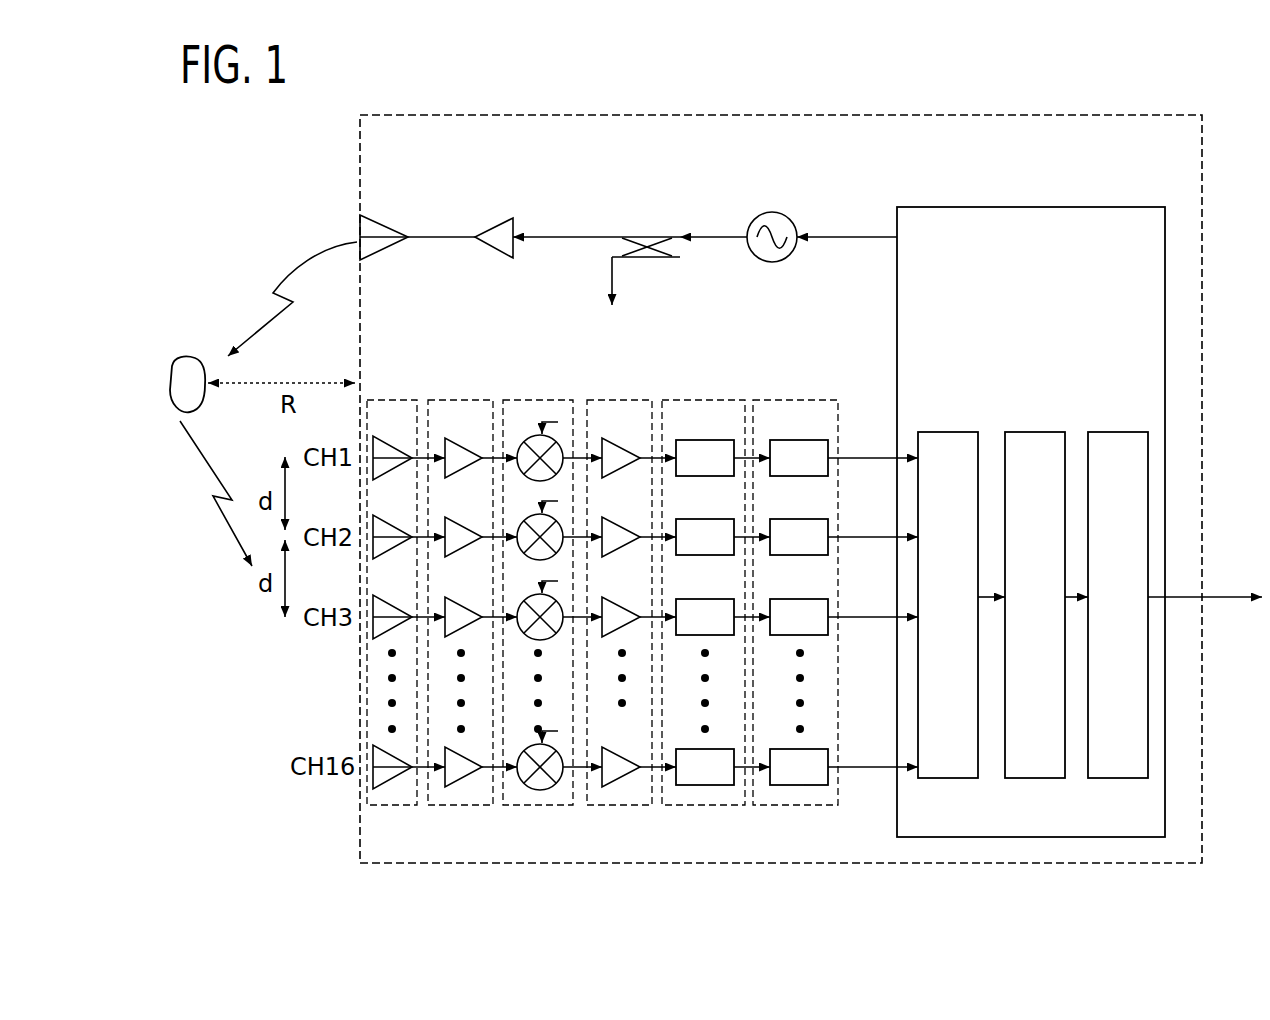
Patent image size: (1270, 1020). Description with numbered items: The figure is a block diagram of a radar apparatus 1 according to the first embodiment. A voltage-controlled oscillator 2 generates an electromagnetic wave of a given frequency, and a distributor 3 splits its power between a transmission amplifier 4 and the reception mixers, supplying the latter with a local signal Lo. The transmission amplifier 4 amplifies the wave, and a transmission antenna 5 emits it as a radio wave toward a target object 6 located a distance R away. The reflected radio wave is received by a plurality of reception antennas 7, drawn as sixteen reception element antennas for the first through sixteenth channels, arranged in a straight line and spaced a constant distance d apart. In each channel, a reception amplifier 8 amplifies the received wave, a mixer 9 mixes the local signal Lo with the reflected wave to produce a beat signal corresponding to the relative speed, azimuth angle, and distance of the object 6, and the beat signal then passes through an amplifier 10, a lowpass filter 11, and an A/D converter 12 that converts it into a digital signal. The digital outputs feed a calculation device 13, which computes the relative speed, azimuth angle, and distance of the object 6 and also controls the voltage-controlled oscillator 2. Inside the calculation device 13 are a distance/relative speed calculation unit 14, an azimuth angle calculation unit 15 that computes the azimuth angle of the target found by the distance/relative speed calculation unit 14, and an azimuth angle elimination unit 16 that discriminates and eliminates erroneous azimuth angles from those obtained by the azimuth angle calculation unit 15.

The radar apparatus 1 is at (615, 113).
The voltage-controlled oscillator 2 is at (772, 212).
The distributor 3 is at (640, 235).
The transmission amplifier 4 is at (495, 220).
The transmission antenna 5 is at (380, 220).
The target object 6 is at (190, 352).
The reception antennas 7 is at (390, 400).
The reception amplifier 8 is at (455, 400).
The mixer 9 is at (530, 400).
The amplifier 10 is at (600, 400).
The lowpass filter 11 is at (683, 400).
The A/D converter 12 is at (765, 400).
The calculation device 13 is at (962, 207).
The distance/relative speed calculation unit 14 is at (935, 432).
The azimuth angle calculation unit 15 is at (1022, 432).
The azimuth angle elimination unit 16 is at (1100, 432).